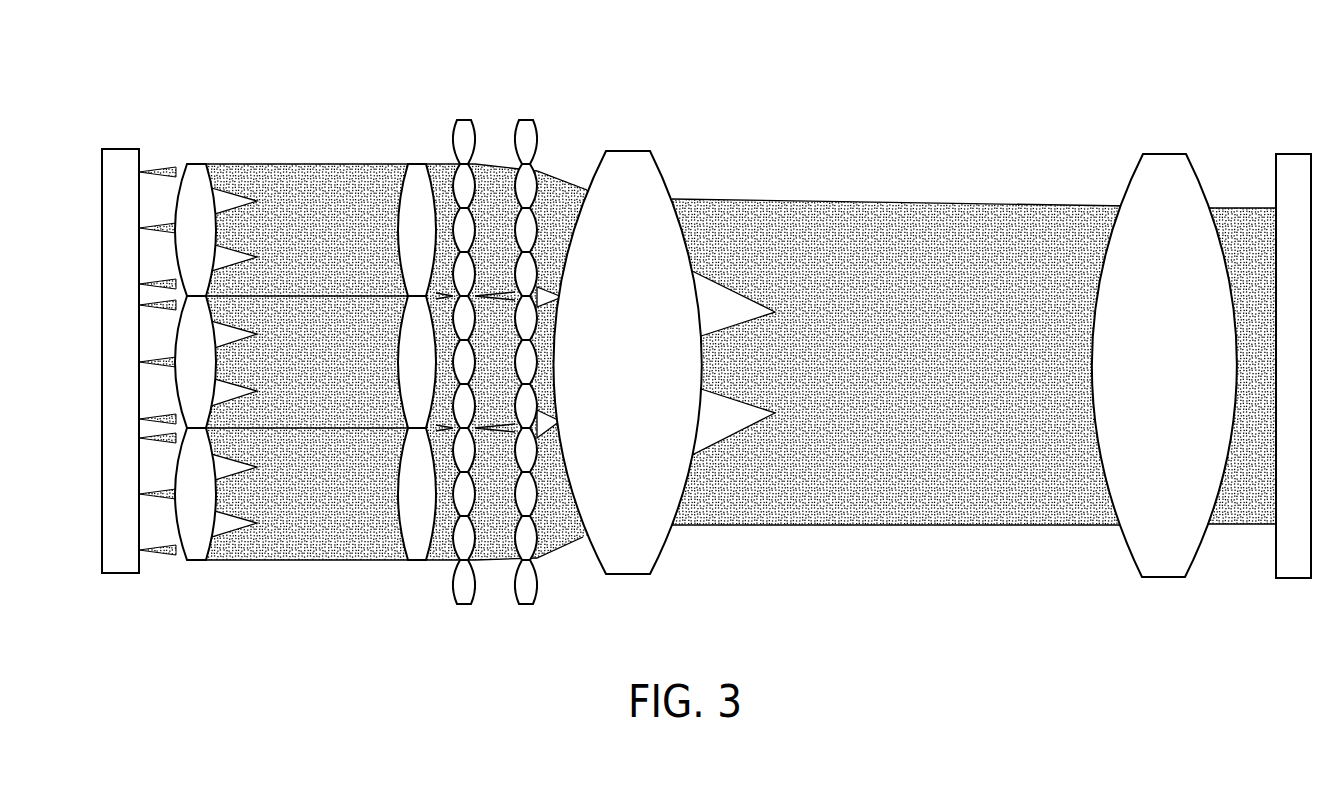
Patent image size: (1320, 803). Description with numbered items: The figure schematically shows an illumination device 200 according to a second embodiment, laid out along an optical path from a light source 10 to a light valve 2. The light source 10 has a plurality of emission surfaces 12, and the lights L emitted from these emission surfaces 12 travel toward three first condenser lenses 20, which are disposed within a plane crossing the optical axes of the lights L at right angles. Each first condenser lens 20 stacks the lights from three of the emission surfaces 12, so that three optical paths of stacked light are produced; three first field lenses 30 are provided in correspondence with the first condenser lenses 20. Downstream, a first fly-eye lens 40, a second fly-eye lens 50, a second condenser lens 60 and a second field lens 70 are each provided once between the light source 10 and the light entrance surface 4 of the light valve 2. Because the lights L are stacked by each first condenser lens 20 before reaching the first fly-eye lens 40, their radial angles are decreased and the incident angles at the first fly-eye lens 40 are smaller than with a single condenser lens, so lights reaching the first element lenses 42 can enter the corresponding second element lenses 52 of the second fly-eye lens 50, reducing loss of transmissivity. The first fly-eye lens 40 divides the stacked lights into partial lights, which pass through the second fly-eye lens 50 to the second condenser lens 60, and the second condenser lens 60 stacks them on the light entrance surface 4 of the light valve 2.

The illumination device 200 is at (686, 318).
The light source 10 is at (121, 158).
The emission surfaces 12 is at (139, 172).
The lights L is at (163, 150).
The first condenser lenses 20 is at (196, 172).
The first field lenses 30 is at (421, 178).
The first fly-eye lens 40 is at (462, 135).
The first element lenses 42 is at (476, 124).
The second fly-eye lens 50 is at (524, 135).
The second element lenses 52 is at (538, 124).
The second condenser lens 60 is at (625, 165).
The second field lens 70 is at (1165, 166).
The light valve 2 is at (1295, 168).
The light entrance surface 4 is at (1272, 236).